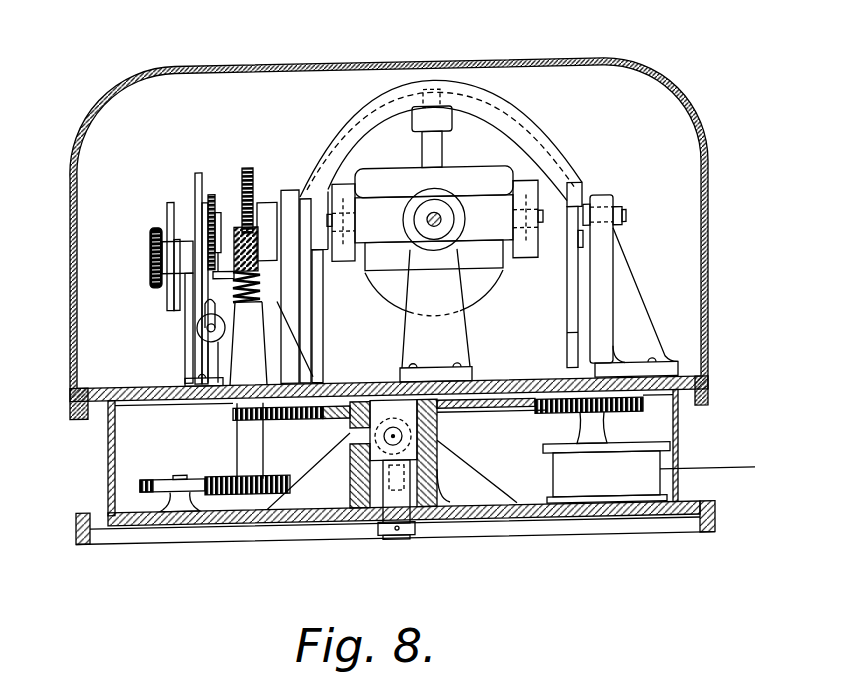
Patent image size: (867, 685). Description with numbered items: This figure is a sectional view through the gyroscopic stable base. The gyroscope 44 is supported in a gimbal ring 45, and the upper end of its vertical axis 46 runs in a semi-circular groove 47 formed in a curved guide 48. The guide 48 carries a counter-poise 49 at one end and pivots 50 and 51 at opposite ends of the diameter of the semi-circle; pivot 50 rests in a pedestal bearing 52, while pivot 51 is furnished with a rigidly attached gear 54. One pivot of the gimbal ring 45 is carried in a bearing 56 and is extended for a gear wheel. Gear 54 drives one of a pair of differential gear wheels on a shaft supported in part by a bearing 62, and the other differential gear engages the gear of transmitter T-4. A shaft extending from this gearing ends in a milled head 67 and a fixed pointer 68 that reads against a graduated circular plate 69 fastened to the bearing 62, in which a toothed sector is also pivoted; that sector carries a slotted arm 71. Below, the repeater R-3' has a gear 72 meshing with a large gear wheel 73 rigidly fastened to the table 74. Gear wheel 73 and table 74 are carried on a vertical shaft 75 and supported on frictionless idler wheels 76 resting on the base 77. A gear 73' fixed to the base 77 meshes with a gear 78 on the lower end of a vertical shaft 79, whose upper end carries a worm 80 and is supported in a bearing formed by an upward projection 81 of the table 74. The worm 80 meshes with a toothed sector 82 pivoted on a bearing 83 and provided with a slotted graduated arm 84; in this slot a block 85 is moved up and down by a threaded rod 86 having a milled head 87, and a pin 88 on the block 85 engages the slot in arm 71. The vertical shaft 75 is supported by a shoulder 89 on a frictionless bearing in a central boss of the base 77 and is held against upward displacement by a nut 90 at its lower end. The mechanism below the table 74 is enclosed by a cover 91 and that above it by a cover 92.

The cover 92 is at (620, 71).
The table 74 is at (487, 388).
The cover 91 is at (108, 449).
The base 77 is at (505, 513).
The frictionless idler wheels 76 is at (355, 436).
The shoulder 89 is at (350, 470).
The vertical shaft 75 is at (390, 506).
The nut 90 is at (415, 536).
The large gear wheel 73 is at (491, 420).
The gear 72 is at (545, 414).
The repeater R-3' is at (649, 456).
The gear 78 is at (232, 474).
The gear 73' is at (156, 469).
The vertical shaft 79 is at (148, 502).
The upward projection 81 is at (248, 391).
The worm 80 is at (262, 298).
The toothed sector 82 is at (258, 253).
The gear 54 is at (247, 165).
The slotted arm 71 is at (198, 169).
The slotted graduated arm 84 is at (212, 191).
The block 85 is at (218, 209).
The fixed pointer 68 is at (169, 200).
The pin 88 is at (193, 238).
The milled head 67 is at (150, 254).
The graduated circular plate 69 is at (176, 293).
The threaded rod 86 is at (205, 308).
The bearing 62 is at (187, 348).
The milled head 87 is at (200, 339).
The pivot 51 is at (284, 188).
The bearing 83 is at (301, 349).
The transmitter T-4 is at (318, 296).
The semi-circular groove 47 is at (525, 133).
The vertical axis 46 is at (440, 151).
The gimbal ring 45 is at (536, 232).
The gyroscope 44 is at (497, 281).
The bearing 56 is at (418, 340).
The curved guide 48 is at (560, 167).
The counter-poise 49 is at (574, 324).
The pedestal bearing 52 is at (618, 290).
The pivot 50 is at (626, 215).